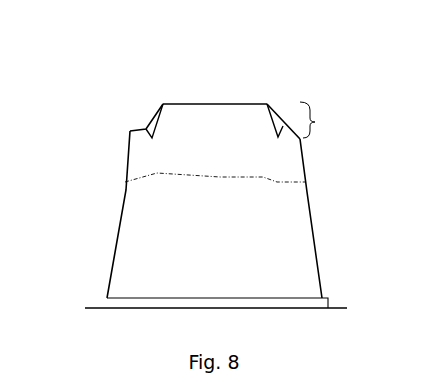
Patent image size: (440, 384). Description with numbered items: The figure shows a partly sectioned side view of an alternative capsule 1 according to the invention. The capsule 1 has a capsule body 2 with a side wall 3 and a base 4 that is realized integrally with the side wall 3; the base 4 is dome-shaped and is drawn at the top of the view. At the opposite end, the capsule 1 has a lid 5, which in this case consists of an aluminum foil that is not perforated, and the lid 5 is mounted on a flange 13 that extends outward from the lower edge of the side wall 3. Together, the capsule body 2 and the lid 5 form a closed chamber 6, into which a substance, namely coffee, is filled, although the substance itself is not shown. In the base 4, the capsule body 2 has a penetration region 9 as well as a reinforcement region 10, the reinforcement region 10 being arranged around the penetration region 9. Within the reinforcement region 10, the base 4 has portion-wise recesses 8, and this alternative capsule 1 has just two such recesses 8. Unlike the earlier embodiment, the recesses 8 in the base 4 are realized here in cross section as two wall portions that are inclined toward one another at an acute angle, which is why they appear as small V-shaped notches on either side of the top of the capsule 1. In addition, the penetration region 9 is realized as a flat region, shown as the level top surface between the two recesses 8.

The capsule 1 is at (223, 190).
The capsule body 2 is at (99, 260).
The side wall 3 is at (310, 207).
The base 4 is at (335, 113).
The lid 5 is at (292, 309).
The closed chamber 6 is at (200, 237).
The portion-wise recesses 8 is at (150, 135).
The penetration region 9 is at (213, 104).
The reinforcement region 10 is at (122, 115).
The flange 13 is at (337, 307).